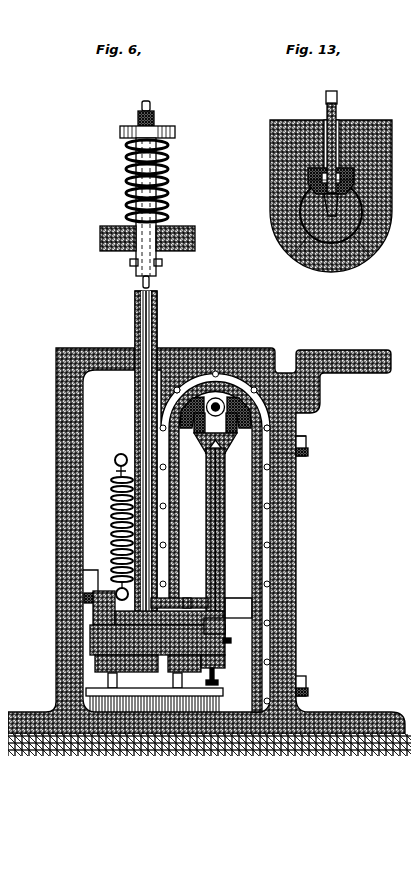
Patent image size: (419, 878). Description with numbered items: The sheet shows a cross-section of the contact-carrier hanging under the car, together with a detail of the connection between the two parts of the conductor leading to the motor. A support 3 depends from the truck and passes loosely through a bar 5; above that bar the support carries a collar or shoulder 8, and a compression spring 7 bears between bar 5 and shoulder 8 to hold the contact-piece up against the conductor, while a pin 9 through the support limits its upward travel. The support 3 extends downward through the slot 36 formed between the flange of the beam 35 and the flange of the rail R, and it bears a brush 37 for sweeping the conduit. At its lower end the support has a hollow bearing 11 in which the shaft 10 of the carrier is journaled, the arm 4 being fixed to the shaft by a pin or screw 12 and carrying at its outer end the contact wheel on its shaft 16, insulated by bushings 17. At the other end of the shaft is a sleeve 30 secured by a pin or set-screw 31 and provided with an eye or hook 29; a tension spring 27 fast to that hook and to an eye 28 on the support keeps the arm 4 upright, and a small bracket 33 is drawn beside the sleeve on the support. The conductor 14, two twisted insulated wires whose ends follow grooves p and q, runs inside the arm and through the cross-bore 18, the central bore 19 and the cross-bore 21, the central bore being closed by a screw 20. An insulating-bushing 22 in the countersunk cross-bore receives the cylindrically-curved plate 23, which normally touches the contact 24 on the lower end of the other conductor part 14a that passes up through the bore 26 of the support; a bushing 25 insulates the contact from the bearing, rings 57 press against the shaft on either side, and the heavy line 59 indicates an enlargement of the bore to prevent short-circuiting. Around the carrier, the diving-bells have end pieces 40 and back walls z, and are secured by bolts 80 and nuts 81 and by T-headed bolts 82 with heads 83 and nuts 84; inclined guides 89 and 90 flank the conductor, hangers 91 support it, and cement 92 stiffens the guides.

In FIG. 6, the support 3 is at (122, 256).
In FIG. 6, the arm 4 is at (210, 534).
In FIG. 6, the bar 5 is at (101, 220).
In FIG. 6, the spring 7 is at (118, 170).
In FIG. 6, the collar or shoulder 8 is at (112, 124).
In FIG. 6, the pin 9 is at (154, 256).
In FIG. 6, the shaft 10 is at (82, 633).
In FIG. 6, the hollow bearing 11 is at (173, 591).
In FIG. 6, the pin or screw 12 is at (208, 673).
In FIG. 6, the conductor 14 is at (217, 493).
In FIG. 6, the conductor 14a is at (130, 287).
In FIG. 13, the conductor 14a is at (317, 88).
In FIG. 6, the shaft 16 is at (226, 420).
In FIG. 6, the bushings 17 is at (190, 424).
In FIG. 6, the cross-bore 18 is at (217, 618).
In FIG. 6, the central bore 19 is at (217, 651).
In FIG. 13, the central bore 19 is at (323, 236).
In FIG. 6, the screw 20 is at (228, 633).
In FIG. 13, the cross-bore 21 is at (372, 216).
In FIG. 13, the insulating-bushing 22 is at (300, 228).
In FIG. 13, the cylindrically-curved plate 23 is at (330, 190).
In FIG. 13, the contact 24 is at (346, 176).
In FIG. 13, the bushing 25 is at (332, 168).
In FIG. 13, the bore 26 is at (332, 116).
In FIG. 6, the spring 27 is at (104, 490).
In FIG. 6, the eye 28 is at (110, 447).
In FIG. 6, the eye or hook 29 is at (109, 580).
In FIG. 6, the sleeve or eye 30 is at (85, 605).
In FIG. 6, the pin or set-screw 31 is at (148, 663).
In FIG. 6, the bracket 33 is at (82, 570).
In FIG. 6, the beam 35 is at (56, 455).
In FIG. 6, the slot 36 is at (148, 345).
In FIG. 6, the brush 37 is at (78, 684).
In FIG. 6, the end pieces 40 is at (234, 592).
In FIG. 6, the rings 57 is at (184, 594).
In FIG. 13, the enlargement 59 is at (346, 228).
In FIG. 6, the bolts 80 is at (300, 686).
In FIG. 6, the nuts 81 is at (298, 672).
In FIG. 6, the T-headed bolts 82 is at (298, 430).
In FIG. 6, the head 83 is at (289, 455).
In FIG. 6, the nut 84 is at (300, 445).
In FIG. 6, the inclined guide 89 is at (185, 384).
In FIG. 6, the inclined guide 90 is at (262, 412).
In FIG. 6, the hangers 91 is at (204, 368).
In FIG. 6, the cement 92 is at (250, 393).
In FIG. 6, the rail R is at (290, 500).
In FIG. 6, the groove p is at (199, 445).
In FIG. 6, the groove q is at (219, 450).
In FIG. 6, the back walls z is at (254, 590).